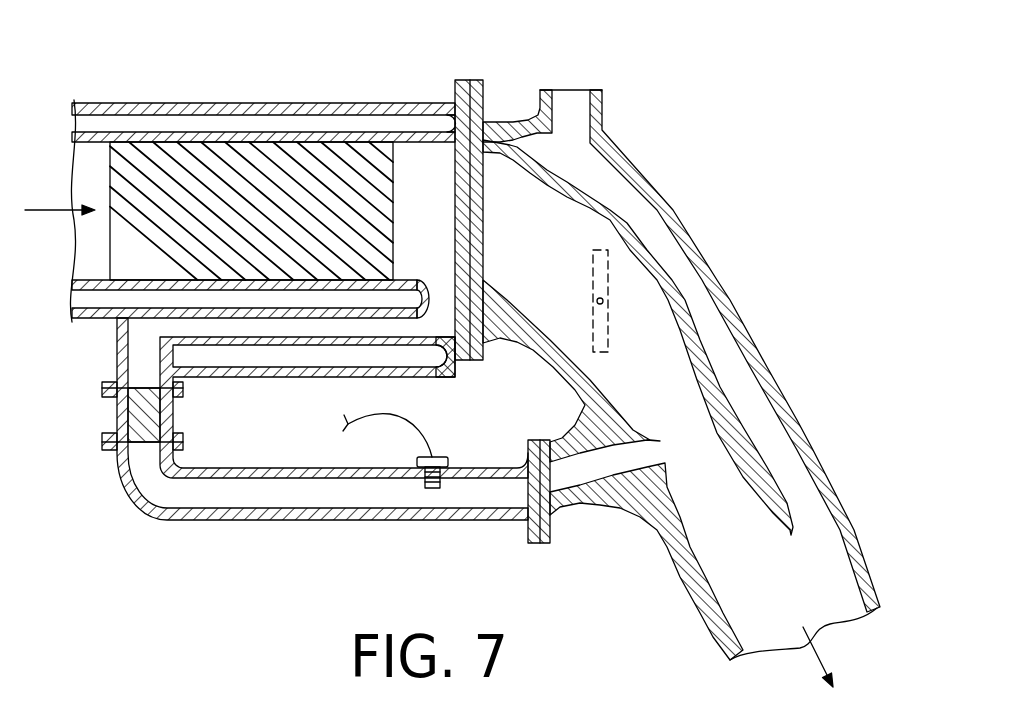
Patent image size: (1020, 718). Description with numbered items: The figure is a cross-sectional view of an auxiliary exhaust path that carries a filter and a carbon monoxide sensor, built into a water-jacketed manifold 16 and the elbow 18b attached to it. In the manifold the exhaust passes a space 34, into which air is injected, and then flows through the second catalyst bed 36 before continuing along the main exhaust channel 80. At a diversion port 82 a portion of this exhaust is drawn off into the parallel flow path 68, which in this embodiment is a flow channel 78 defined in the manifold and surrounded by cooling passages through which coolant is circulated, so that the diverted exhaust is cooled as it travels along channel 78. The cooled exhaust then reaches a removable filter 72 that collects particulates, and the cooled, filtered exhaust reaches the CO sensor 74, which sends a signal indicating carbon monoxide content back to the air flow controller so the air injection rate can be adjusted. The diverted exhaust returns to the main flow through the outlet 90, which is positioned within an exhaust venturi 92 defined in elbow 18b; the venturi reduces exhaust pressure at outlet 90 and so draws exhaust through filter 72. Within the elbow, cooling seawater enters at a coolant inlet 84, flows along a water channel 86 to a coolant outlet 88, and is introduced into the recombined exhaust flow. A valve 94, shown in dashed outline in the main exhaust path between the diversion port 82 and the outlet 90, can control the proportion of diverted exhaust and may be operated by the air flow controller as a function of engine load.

The manifold 16 is at (200, 103).
The elbow 18b is at (762, 362).
The space 34 is at (90, 152).
The second catalyst bed 36 is at (293, 163).
The parallel flow path 68 is at (140, 540).
The filter 72 is at (116, 418).
The CO sensor 74 is at (443, 452).
The flow channel 78 is at (260, 300).
The main exhaust channel 80 is at (447, 200).
The diversion port 82 is at (443, 268).
The coolant inlet 84 is at (574, 90).
The water channel 86 is at (704, 306).
The coolant outlet 88 is at (813, 535).
The outlet 90 is at (654, 446).
The exhaust venturi 92 is at (707, 487).
The valve 94 is at (608, 272).